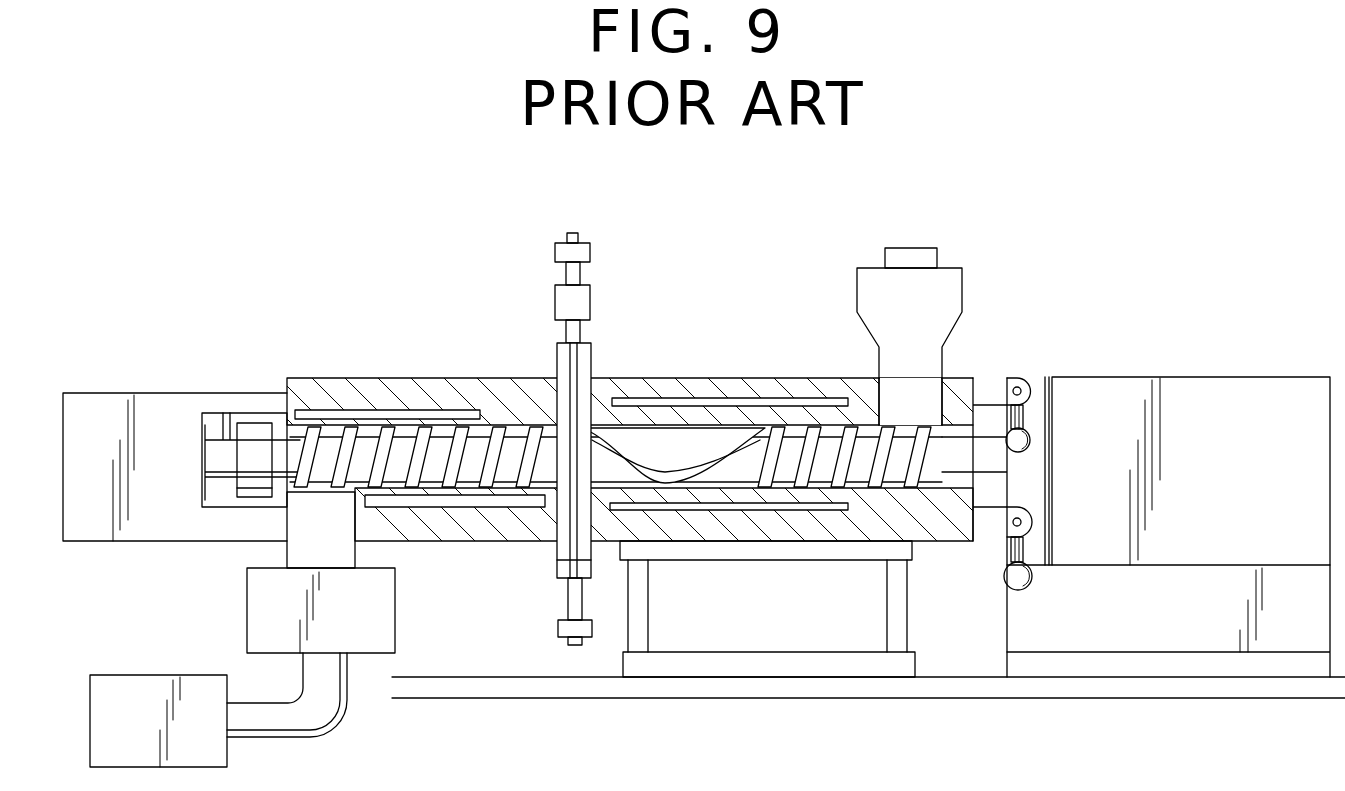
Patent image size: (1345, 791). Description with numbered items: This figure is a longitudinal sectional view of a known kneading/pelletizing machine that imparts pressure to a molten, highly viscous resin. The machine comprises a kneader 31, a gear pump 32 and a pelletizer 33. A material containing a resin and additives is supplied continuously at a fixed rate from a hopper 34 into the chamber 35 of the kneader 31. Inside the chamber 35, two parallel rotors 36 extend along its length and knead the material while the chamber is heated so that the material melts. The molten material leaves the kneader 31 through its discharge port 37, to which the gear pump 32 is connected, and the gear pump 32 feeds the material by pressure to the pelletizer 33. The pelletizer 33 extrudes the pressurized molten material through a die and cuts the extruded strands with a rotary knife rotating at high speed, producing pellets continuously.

The kneader 31 is at (655, 372).
The gear pump 32 is at (390, 628).
The pelletizer 33 is at (143, 677).
The hopper 34 is at (912, 378).
The chamber 35 is at (766, 378).
The rotors 36 is at (750, 472).
The discharge port 37 is at (310, 515).